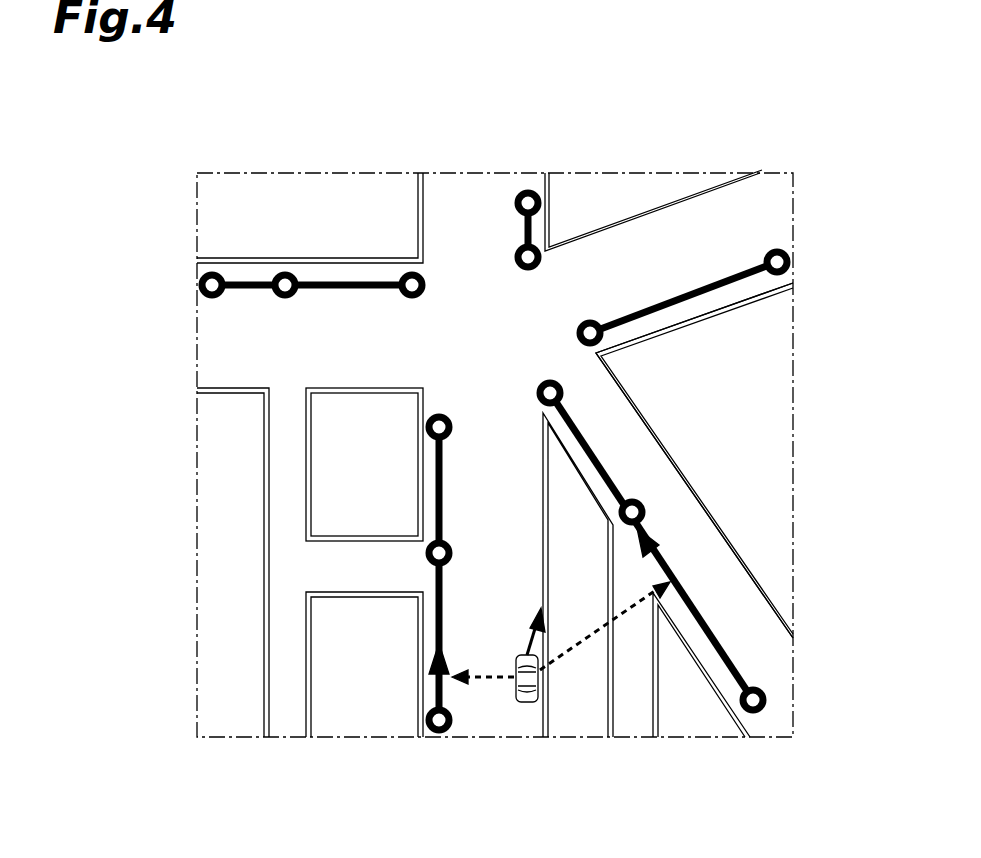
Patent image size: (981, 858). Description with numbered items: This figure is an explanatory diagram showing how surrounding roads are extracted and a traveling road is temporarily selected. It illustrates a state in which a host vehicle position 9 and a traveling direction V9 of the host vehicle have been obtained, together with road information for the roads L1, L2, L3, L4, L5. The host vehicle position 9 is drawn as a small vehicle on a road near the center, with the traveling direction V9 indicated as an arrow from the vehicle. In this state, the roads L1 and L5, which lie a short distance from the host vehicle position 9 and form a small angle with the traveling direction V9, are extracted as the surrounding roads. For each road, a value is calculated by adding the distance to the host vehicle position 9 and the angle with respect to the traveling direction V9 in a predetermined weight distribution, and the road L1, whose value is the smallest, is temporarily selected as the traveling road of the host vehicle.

The road L1 is at (512, 538).
The road L2 is at (222, 332).
The road L3 is at (447, 197).
The road L4 is at (657, 240).
The road L5 is at (715, 568).
The host vehicle position 9 is at (525, 707).
The traveling direction V9 is at (540, 612).